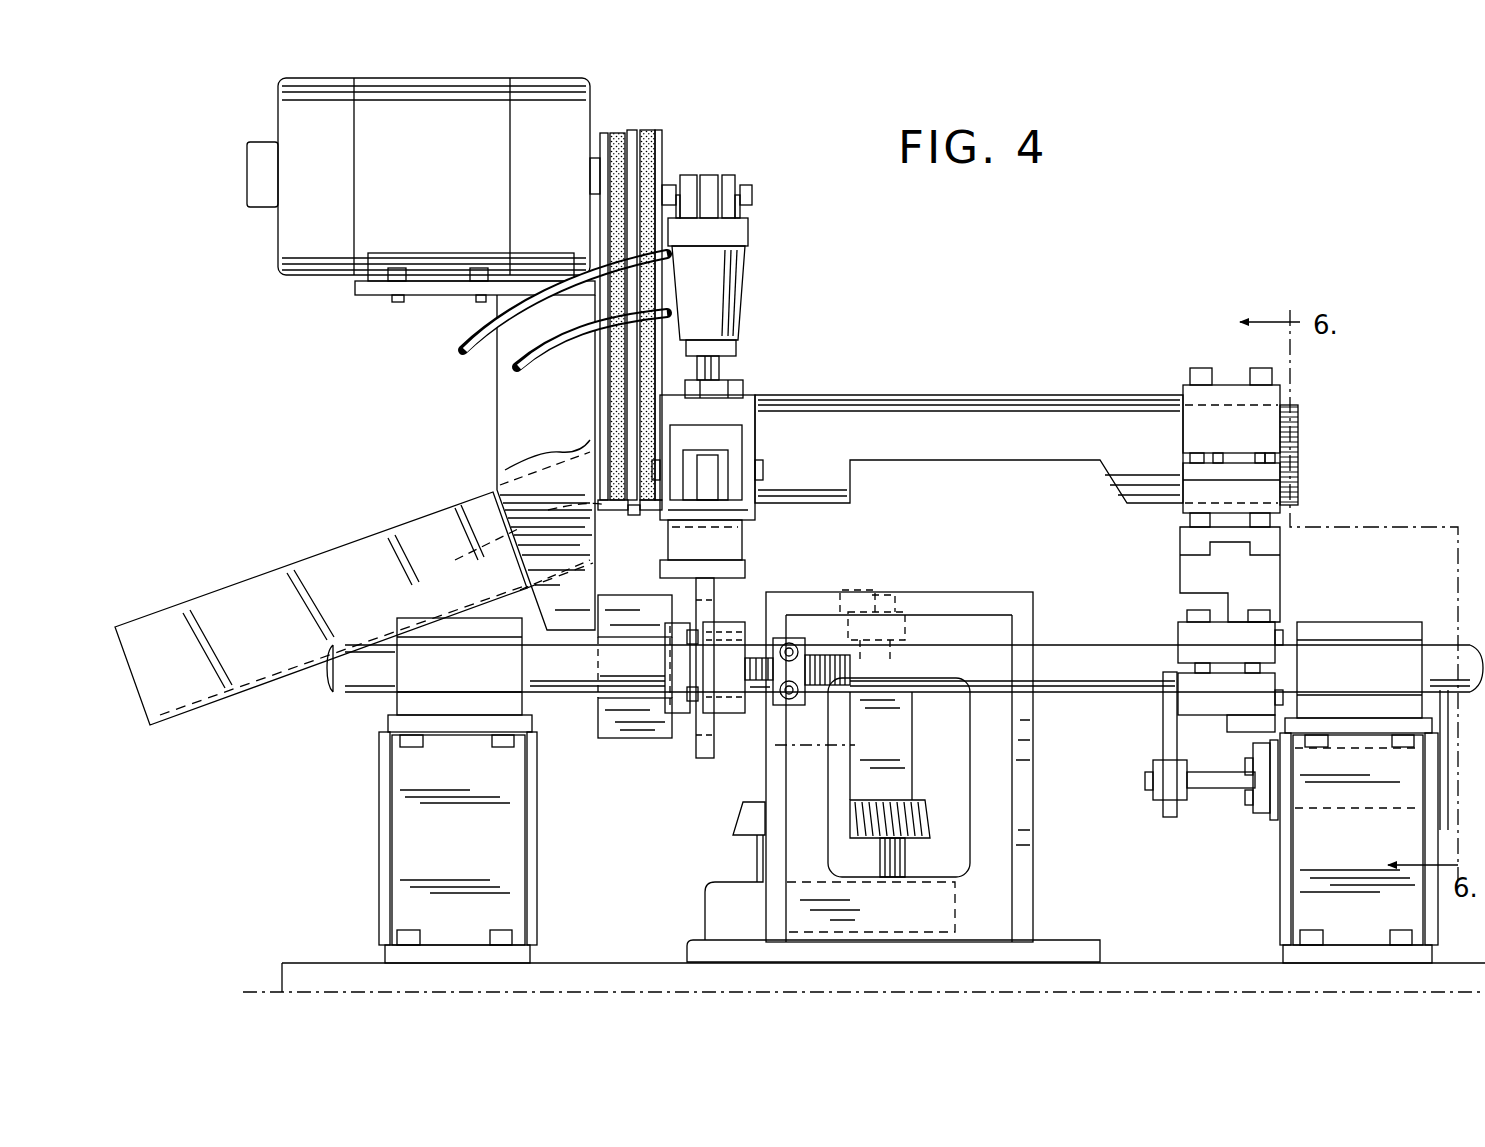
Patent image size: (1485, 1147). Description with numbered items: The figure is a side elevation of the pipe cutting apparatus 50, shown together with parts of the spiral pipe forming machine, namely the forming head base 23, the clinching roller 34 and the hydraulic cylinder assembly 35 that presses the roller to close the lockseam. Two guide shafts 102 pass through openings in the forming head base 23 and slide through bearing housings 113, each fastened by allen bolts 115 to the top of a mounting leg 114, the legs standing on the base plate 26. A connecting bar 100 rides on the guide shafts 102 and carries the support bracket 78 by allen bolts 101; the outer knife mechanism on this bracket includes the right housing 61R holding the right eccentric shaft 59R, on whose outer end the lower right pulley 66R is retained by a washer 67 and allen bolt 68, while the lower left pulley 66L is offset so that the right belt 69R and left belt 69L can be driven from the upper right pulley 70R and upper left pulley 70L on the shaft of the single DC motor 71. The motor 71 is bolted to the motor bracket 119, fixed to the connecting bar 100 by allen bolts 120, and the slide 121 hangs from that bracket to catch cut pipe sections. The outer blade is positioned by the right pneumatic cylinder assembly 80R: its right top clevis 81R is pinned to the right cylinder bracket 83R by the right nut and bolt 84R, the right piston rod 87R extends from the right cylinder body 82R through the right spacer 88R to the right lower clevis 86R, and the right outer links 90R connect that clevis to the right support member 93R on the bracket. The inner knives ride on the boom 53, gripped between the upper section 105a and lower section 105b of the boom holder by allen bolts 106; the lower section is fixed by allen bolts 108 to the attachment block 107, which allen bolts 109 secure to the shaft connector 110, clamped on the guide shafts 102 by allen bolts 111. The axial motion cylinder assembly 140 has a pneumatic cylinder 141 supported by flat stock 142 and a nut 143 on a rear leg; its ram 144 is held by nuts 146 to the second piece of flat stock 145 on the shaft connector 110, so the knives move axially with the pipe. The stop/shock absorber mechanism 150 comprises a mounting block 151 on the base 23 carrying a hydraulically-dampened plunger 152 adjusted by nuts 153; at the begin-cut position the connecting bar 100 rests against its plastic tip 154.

The forming head base 23 is at (1030, 812).
The base plate 26 is at (1170, 980).
The clinching roller 34 is at (912, 635).
The hydraulic cylinder assembly 35 is at (935, 805).
The pipe cutting apparatus 50 is at (1078, 280).
The boom 53 is at (1026, 450).
The right eccentric shaft 59R is at (595, 438).
The right housing 61R is at (750, 475).
The lower left pulley 66L is at (525, 560).
The lower right pulley 66R is at (635, 515).
The washer 67 is at (590, 462).
The allen bolt 68 is at (592, 462).
The left belt 69L is at (612, 354).
The right belt 69R is at (612, 375).
The upper left pulley 70L is at (605, 132).
The upper right pulley 70R is at (645, 135).
The DC motor 71 is at (423, 176).
The support bracket 78 is at (716, 625).
The right pneumatic cylinder assembly 80R is at (743, 249).
The right top clevis 81R is at (727, 175).
The right cylinder body 82R is at (708, 287).
The right cylinder bracket 83R is at (705, 175).
The right nut and bolt 84R is at (752, 195).
The right lower clevis 86R is at (745, 425).
The right piston rod 87R is at (722, 372).
The right spacer 88R is at (740, 388).
The right outer links 90R is at (722, 480).
The right support member 93R is at (740, 540).
The connecting bar 100 is at (735, 715).
The allen bolts 101 is at (690, 638).
The guide shafts 102 is at (905, 668).
The upper section of boom holder 105a is at (1268, 398).
The lower section of boom holder 105b is at (1262, 490).
The allen bolts 106 is at (1258, 368).
The attachment block 107 is at (1210, 565).
The allen bolts 108 is at (1265, 520).
The allen bolts 109 is at (1290, 622).
The shaft connector 110 is at (1230, 677).
The allen bolts 111 is at (1240, 612).
The bearing housings 113 is at (909, 668).
The mounting legs 114 is at (908, 839).
The allen bolts 115 is at (500, 745).
The motor bracket 119 is at (520, 325).
The allen bolts 120 is at (590, 700).
The slide 121 is at (354, 608).
The axial motion cylinder assembly 140 is at (1320, 810).
The pneumatic cylinder 141 is at (1462, 770).
The flat stock 142 is at (1268, 822).
The nut 143 is at (1252, 795).
The ram 144 is at (1230, 780).
The second piece of flat stock 145 is at (1172, 818).
The nuts 146 is at (1160, 765).
The stop/shock absorber mechanism 150 is at (786, 712).
The mounting block 151 is at (805, 700).
The hydraulically-dampened plunger 152 is at (880, 665).
The nuts 153 is at (810, 640).
The plastic tip 154 is at (700, 670).